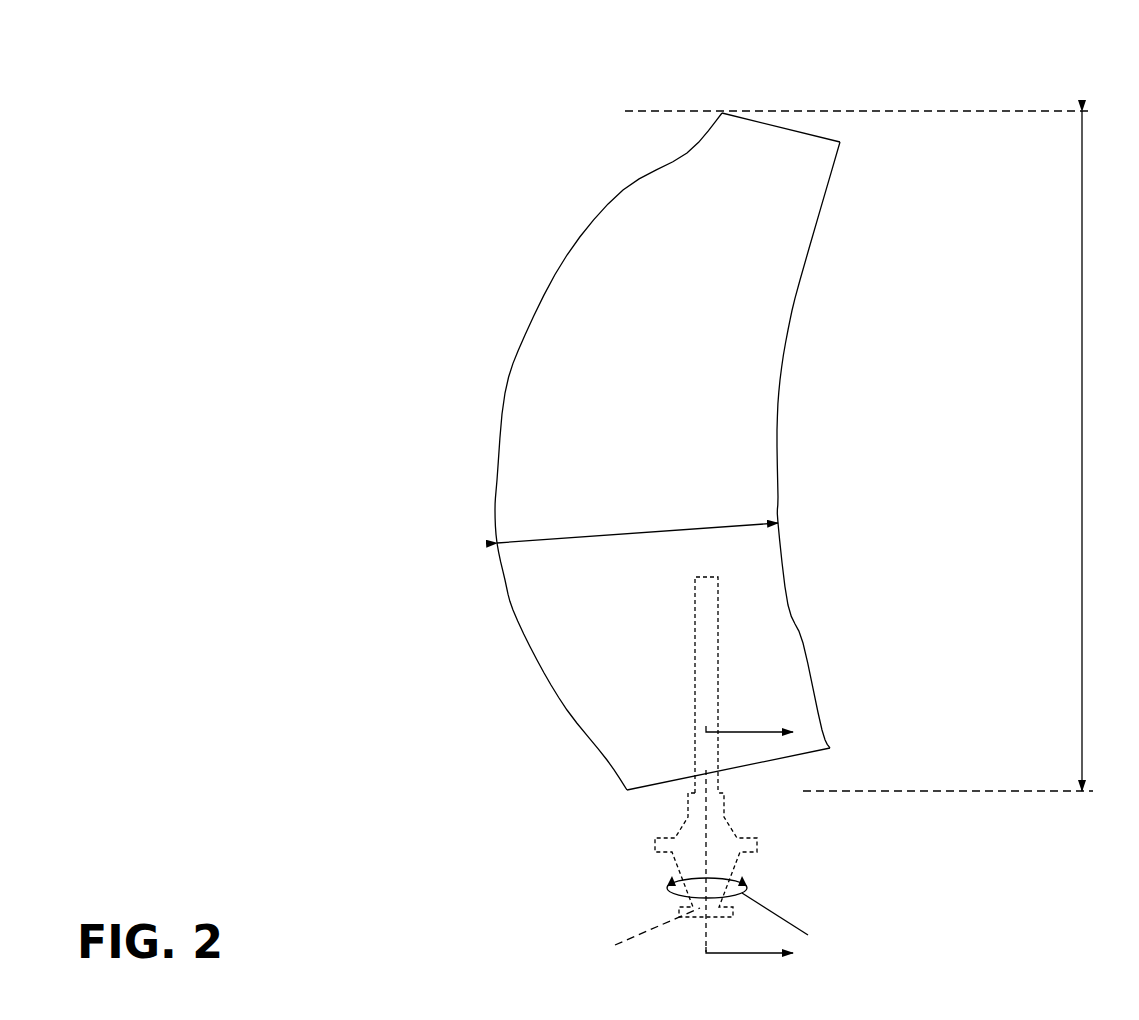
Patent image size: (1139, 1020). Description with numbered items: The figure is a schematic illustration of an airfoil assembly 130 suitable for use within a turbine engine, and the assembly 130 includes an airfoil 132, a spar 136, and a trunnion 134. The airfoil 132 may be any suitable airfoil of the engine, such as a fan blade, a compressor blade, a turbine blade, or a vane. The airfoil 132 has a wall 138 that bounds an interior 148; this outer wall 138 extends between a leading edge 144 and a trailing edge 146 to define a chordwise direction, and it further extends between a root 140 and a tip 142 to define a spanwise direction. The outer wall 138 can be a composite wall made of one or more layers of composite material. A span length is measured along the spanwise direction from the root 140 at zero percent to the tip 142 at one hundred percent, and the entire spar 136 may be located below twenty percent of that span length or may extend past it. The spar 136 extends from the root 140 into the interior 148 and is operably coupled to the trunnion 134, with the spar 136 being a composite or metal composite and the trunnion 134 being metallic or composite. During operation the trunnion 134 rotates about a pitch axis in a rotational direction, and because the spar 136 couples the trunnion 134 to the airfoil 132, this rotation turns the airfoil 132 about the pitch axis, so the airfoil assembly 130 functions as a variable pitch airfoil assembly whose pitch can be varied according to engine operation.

The airfoil assembly 130 is at (248, 191).
The airfoil 132 is at (505, 393).
The trunnion 134 is at (737, 826).
The spar 136 is at (718, 682).
The wall 138 is at (672, 212).
The root 140 is at (807, 753).
The tip 142 is at (808, 128).
The leading edge 144 is at (567, 255).
The trailing edge 146 is at (803, 277).
The interior 148 is at (753, 605).